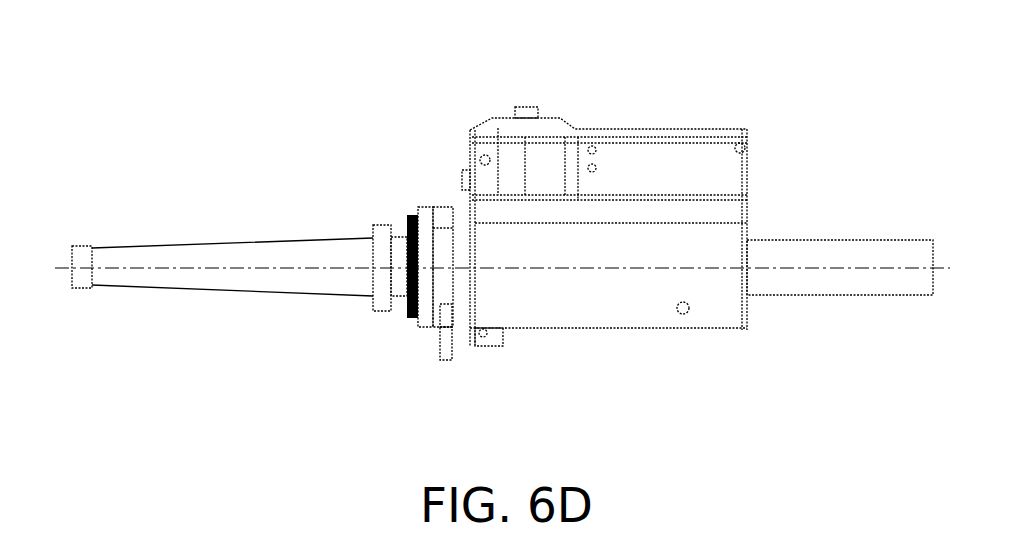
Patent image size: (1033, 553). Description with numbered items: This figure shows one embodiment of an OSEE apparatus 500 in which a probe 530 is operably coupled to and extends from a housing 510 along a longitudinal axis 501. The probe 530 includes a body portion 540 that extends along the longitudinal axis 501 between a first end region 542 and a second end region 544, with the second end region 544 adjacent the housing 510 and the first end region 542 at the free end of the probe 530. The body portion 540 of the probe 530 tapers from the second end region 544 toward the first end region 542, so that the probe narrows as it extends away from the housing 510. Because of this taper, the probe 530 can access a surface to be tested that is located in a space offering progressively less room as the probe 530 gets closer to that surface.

The OSEE apparatus 500 is at (670, 214).
The longitudinal axis 501 is at (843, 268).
The housing 510 is at (689, 340).
The probe 530 is at (239, 250).
The body portion 540 is at (243, 243).
The first end region 542 is at (93, 248).
The second end region 544 is at (372, 237).